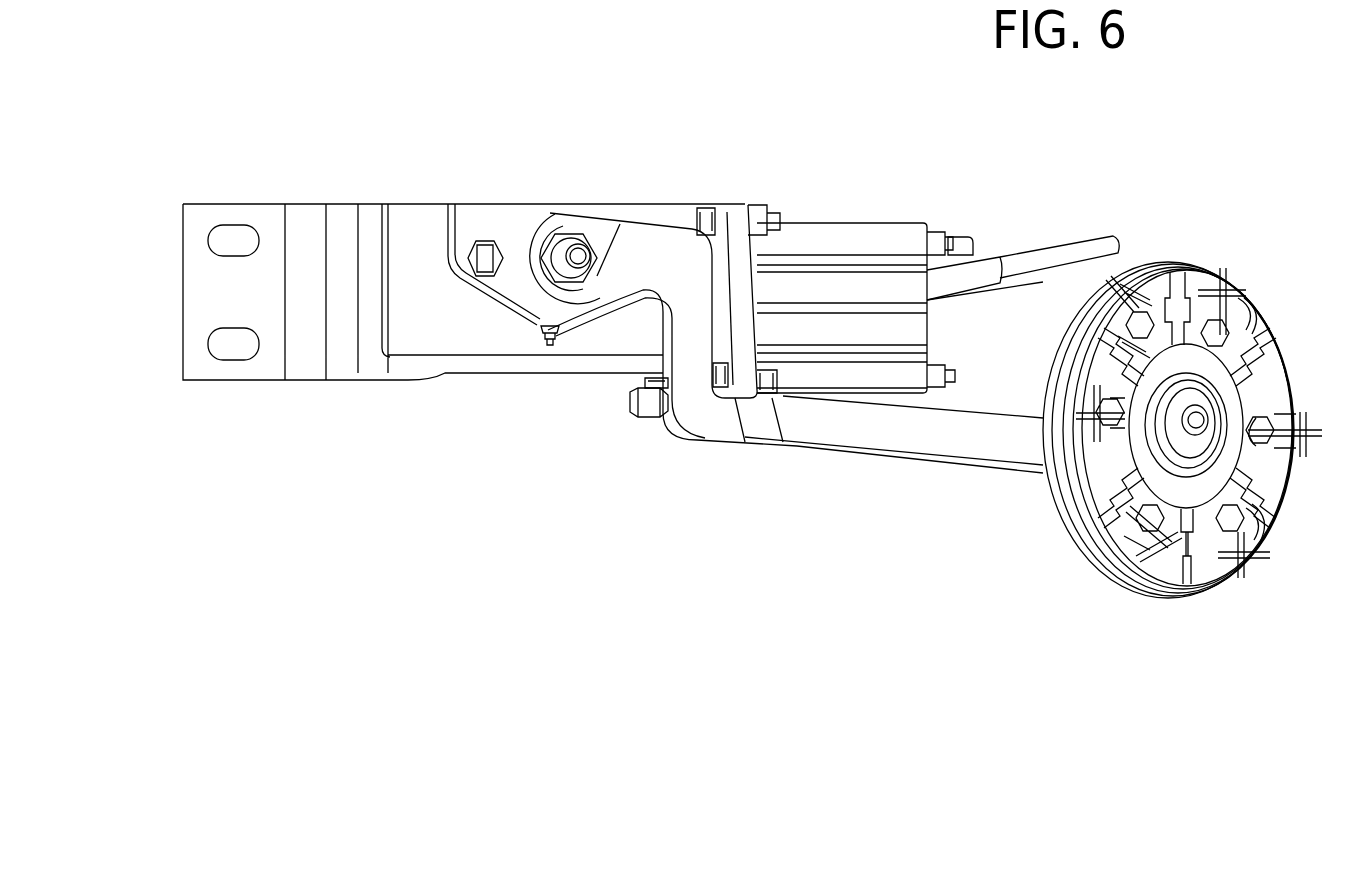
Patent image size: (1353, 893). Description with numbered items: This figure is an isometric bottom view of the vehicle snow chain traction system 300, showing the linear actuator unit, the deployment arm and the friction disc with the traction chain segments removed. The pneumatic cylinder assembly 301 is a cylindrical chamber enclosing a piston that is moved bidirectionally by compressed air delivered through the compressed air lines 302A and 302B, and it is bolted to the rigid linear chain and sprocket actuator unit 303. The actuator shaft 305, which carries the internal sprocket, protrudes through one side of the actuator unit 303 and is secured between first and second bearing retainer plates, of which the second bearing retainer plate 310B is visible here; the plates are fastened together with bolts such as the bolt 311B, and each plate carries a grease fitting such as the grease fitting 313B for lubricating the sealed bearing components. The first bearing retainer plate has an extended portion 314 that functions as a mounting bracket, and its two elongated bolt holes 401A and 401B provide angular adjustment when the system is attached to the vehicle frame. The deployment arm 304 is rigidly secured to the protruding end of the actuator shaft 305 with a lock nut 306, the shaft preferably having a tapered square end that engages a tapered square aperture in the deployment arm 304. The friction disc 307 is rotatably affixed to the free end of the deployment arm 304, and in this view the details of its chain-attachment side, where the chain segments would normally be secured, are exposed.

The vehicle snow chain traction system 300 is at (205, 130).
The pneumatic cylinder assembly 301 is at (838, 248).
The compressed air line 302A is at (1102, 247).
The compressed air line 302B is at (960, 248).
The linear chain and sprocket actuator unit 303 is at (608, 340).
The deployment arm 304 is at (898, 430).
The actuator shaft 305 is at (582, 245).
The lock nut 306 is at (571, 238).
The friction disc 307 is at (1117, 555).
The second bearing retainer plate 310B is at (512, 292).
The bolt 311B is at (485, 243).
The grease fitting 313B is at (548, 340).
The extended portion 314 is at (347, 362).
The elongated bolt hole 401A is at (211, 359).
The elongated bolt hole 401B is at (211, 256).